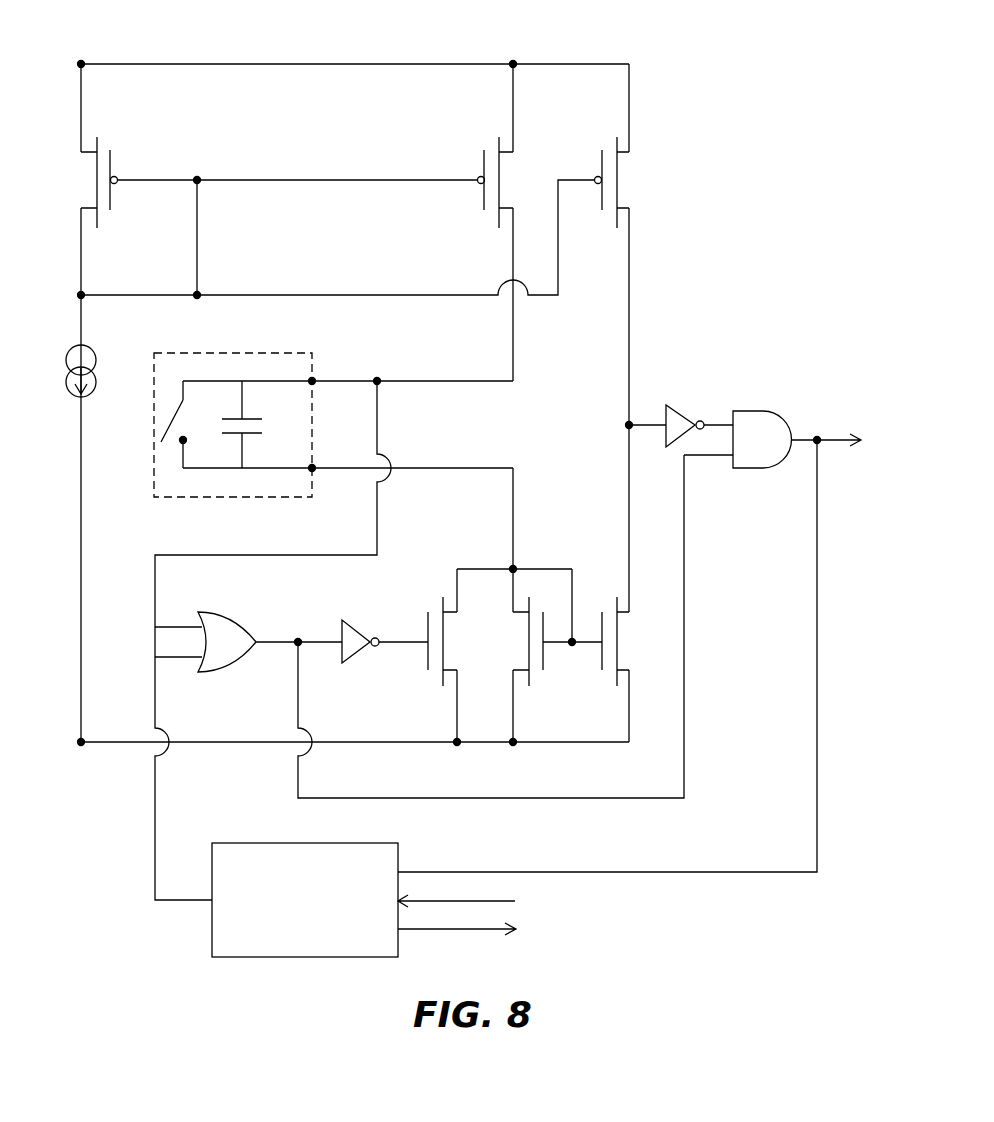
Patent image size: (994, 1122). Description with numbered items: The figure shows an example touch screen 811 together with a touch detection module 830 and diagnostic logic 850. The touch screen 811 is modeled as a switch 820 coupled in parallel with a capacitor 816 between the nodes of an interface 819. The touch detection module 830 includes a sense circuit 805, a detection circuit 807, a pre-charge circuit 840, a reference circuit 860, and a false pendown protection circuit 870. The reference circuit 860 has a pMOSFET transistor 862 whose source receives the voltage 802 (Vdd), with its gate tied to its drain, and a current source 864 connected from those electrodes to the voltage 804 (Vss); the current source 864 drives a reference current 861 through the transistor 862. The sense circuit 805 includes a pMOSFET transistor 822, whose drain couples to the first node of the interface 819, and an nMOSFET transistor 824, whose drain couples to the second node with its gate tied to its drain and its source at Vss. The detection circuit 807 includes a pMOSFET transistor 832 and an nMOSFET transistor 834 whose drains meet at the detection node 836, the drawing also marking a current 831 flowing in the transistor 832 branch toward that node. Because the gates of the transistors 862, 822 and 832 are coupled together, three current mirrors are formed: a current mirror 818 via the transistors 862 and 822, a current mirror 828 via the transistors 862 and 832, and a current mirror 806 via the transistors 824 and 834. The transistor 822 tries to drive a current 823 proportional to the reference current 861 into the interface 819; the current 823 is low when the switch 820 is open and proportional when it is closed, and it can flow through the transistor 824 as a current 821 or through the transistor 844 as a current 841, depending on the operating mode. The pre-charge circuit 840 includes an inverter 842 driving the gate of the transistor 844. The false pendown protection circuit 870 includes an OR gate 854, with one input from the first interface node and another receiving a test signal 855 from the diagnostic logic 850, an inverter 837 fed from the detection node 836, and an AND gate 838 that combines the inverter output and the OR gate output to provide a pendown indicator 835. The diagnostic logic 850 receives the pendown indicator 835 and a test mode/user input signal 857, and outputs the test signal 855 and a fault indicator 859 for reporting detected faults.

The voltage Vdd 802 is at (98, 32).
The voltage Vss 804 is at (88, 773).
The sense circuit 805 is at (524, 358).
The current mirror 806 is at (588, 544).
The detection circuit 807 is at (622, 358).
The touch screen 811 is at (333, 425).
The capacitor 816 is at (262, 426).
The current mirror 818 is at (288, 134).
The interface 819 is at (318, 388).
The switch 820 is at (182, 426).
The current 821 is at (523, 690).
The transistor 822 is at (472, 156).
The current 823 is at (506, 350).
The transistor 824 is at (518, 640).
The current mirror 828 is at (592, 252).
The touch detection module 830 is at (716, 69).
The current 831 is at (650, 350).
The transistor 832 is at (637, 158).
The transistor 834 is at (627, 638).
The pendown indicator 835 is at (852, 433).
The detection node 836 is at (623, 431).
The inverter 837 is at (674, 402).
The AND gate 838 is at (748, 402).
The pre-charge circuit 840 is at (382, 680).
The current 841 is at (449, 690).
The inverter 842 is at (348, 616).
The transistor 844 is at (416, 608).
The diagnostic logic 850 is at (305, 900).
The OR gate 854 is at (208, 608).
The test signal 855 is at (150, 886).
The test mode/user input signal 857 is at (530, 902).
The fault indicator 859 is at (530, 930).
The reference circuit 860 is at (148, 42).
The reference current 861 is at (102, 570).
The transistor 862 is at (118, 157).
The current source 864 is at (96, 343).
The false pendown protection circuit 870 is at (282, 680).